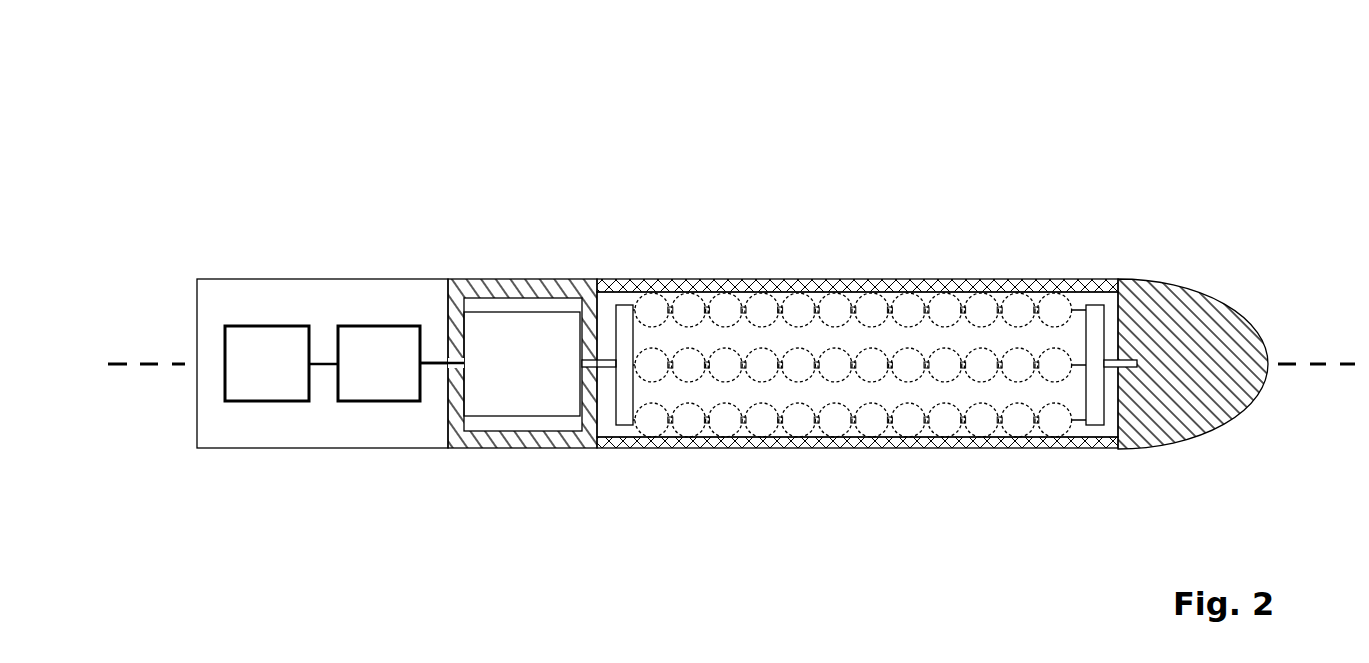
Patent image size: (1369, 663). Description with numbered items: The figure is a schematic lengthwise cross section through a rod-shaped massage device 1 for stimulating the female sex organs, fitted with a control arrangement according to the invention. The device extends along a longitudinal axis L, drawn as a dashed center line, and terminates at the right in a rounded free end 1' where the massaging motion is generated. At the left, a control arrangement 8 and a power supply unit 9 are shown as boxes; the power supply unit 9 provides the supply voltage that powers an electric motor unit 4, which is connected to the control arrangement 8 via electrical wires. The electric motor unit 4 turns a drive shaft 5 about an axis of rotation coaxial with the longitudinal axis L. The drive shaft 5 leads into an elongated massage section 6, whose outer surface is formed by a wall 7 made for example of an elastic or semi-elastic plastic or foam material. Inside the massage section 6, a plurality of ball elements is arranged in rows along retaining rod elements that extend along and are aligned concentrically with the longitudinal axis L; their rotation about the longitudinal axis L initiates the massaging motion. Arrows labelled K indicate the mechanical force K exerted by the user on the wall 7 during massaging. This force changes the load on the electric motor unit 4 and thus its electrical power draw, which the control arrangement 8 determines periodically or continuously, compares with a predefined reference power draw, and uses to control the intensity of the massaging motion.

The massage device 1 is at (603, 236).
The free end 1' is at (1186, 308).
The electric motor unit 4 is at (500, 337).
The drive shaft 5 is at (600, 362).
The massage section 6 is at (786, 240).
The wall 7 is at (951, 278).
The control arrangement 8 is at (386, 363).
The power supply unit 9 is at (267, 363).
The mechanical force K is at (880, 270).
The longitudinal axis L is at (731, 386).